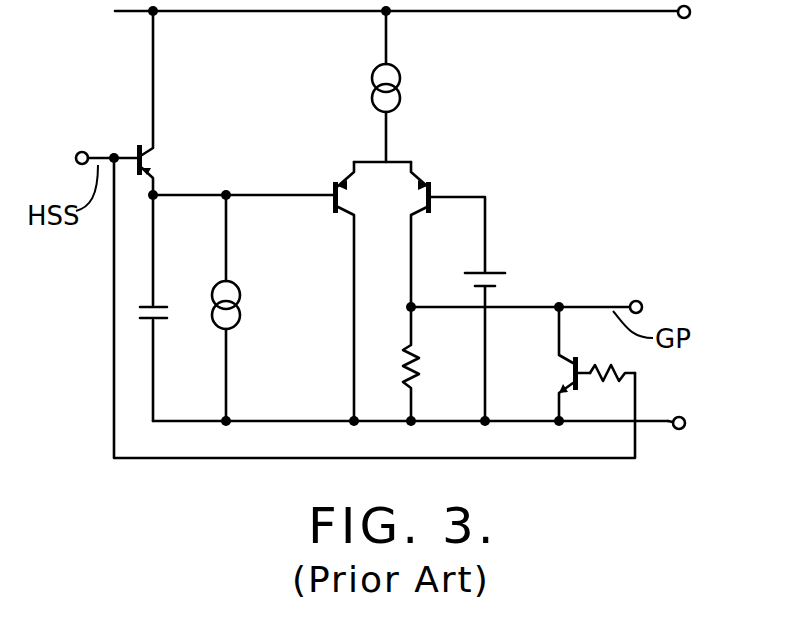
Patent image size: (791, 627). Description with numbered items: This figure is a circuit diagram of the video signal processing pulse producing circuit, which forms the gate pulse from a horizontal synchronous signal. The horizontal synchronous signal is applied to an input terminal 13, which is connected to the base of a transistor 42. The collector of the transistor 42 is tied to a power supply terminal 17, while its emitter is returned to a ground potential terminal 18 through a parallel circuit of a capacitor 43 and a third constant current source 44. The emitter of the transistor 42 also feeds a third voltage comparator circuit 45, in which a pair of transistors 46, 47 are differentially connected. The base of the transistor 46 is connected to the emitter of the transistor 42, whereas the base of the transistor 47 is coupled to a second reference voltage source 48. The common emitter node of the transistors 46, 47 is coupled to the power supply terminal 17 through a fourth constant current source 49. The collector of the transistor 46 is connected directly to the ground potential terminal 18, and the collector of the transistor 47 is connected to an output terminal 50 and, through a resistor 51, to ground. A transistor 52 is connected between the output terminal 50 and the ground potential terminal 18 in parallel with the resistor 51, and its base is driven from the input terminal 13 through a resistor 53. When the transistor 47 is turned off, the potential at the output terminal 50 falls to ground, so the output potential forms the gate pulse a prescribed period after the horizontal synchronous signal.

The input terminal 13 is at (81, 151).
The power supply terminal 17 is at (682, 19).
The ground potential terminal 18 is at (681, 430).
The transistor 42 is at (147, 157).
The capacitor 43 is at (158, 322).
The third constant current source 44 is at (241, 296).
The third voltage comparator circuit 45 is at (393, 276).
The transistor 46 is at (333, 189).
The transistor 47 is at (433, 189).
The second reference voltage source 48 is at (500, 268).
The fourth constant current source 49 is at (399, 80).
The output terminal 50 is at (637, 300).
The resistor 51 is at (420, 363).
The transistor 52 is at (571, 372).
The resistor 53 is at (606, 384).